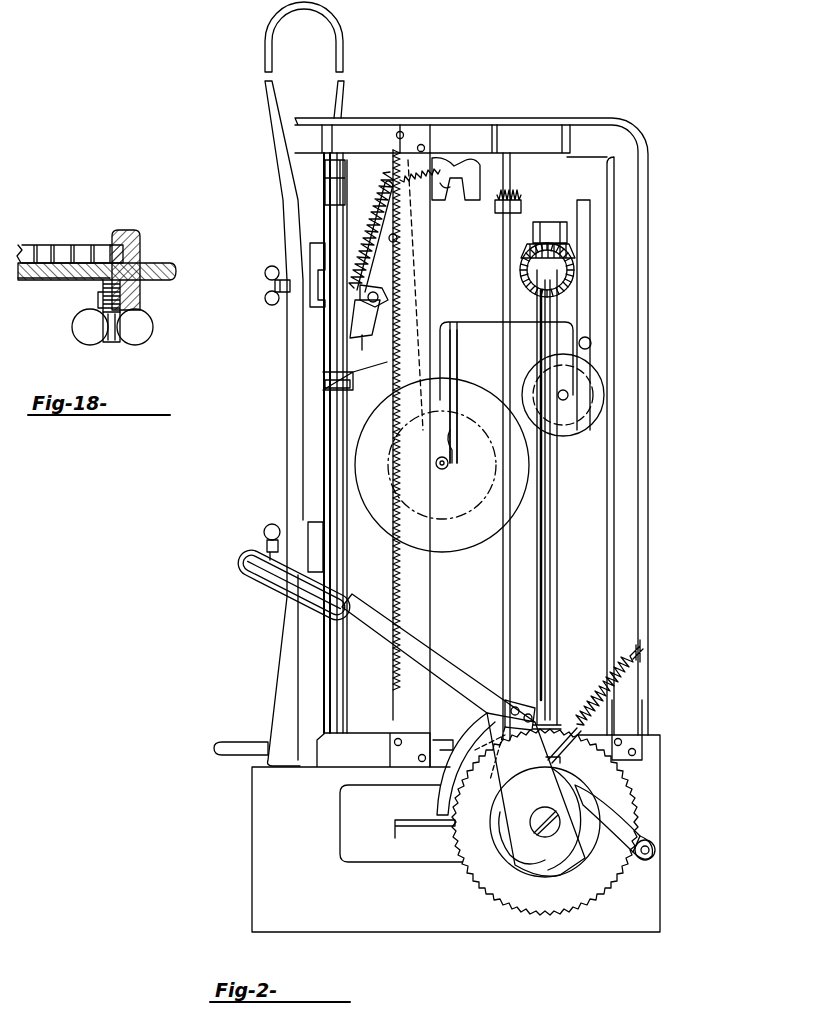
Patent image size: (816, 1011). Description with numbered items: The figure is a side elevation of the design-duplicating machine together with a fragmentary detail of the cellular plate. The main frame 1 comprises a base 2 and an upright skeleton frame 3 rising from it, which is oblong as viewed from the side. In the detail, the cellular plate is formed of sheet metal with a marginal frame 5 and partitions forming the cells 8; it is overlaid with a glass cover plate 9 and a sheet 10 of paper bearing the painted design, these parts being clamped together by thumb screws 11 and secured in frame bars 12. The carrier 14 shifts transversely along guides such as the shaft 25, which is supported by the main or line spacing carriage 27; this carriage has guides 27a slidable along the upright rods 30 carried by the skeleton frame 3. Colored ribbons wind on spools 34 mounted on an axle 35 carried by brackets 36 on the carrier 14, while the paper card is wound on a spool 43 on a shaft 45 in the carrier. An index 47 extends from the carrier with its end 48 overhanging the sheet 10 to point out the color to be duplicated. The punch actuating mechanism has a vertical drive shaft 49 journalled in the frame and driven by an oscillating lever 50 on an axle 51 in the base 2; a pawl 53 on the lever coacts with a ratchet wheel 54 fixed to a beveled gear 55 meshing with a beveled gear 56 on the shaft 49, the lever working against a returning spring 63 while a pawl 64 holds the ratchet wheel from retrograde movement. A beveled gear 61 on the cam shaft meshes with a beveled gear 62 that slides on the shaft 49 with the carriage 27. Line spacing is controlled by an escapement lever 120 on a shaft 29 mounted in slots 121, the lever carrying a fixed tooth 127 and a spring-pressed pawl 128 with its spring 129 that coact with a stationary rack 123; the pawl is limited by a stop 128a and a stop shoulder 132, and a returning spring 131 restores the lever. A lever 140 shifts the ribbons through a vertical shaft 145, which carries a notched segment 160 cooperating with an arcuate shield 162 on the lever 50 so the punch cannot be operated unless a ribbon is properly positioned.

In FIG. 2, the main frame 1 is at (200, 690).
In FIG. 2, the base 2 is at (252, 848).
In FIG. 2, the upright skeleton frame 3 is at (668, 520).
In FIG. 18, the marginal frame 5 is at (110, 248).
In FIG. 18, the cells 8 is at (45, 248).
In FIG. 18, the cover plate 9 is at (42, 280).
In FIG. 18, the sheet 10 is at (72, 282).
In FIG. 18, the thumb screws 11 is at (148, 335).
In FIG. 2, the thumb screws 11 is at (264, 296).
In FIG. 18, the frame bars 12 is at (140, 240).
In FIG. 2, the frame bars 12 is at (290, 622).
In FIG. 2, the carrier 14 is at (506, 392).
In FIG. 2, the shaft 25 is at (592, 343).
In FIG. 2, the main or line spacing carriage 27 is at (470, 328).
In FIG. 2, the guides 27a is at (330, 385).
In FIG. 2, the shaft 29 is at (398, 238).
In FIG. 2, the upright rods 30 is at (335, 665).
In FIG. 2, the spools 34 is at (380, 518).
In FIG. 2, the axle 35 is at (450, 468).
In FIG. 2, the brackets 36 is at (456, 430).
In FIG. 2, the spool 43 is at (575, 422).
In FIG. 2, the shaft 45 is at (568, 400).
In FIG. 2, the index 47 is at (264, 68).
In FIG. 2, the end of index 48 is at (300, 262).
In FIG. 2, the drive shaft 49 is at (548, 540).
In FIG. 2, the oscillating lever 50 is at (452, 662).
In FIG. 2, the axle 51 is at (565, 832).
In FIG. 2, the pawl 53 is at (508, 765).
In FIG. 2, the ratchet wheel 54 is at (500, 820).
In FIG. 2, the beveled gear 55 is at (470, 880).
In FIG. 2, the beveled gear 56 is at (564, 722).
In FIG. 2, the beveled gear 61 is at (560, 286).
In FIG. 2, the beveled gear 62 is at (565, 255).
In FIG. 2, the returning spring 63 is at (592, 688).
In FIG. 2, the pawl 64 is at (640, 835).
In FIG. 2, the lever 120 is at (392, 210).
In FIG. 2, the slots 121 is at (410, 262).
In FIG. 2, the rack 123 is at (392, 572).
In FIG. 2, the fixed tooth 127 is at (408, 150).
In FIG. 2, the pawl 128 is at (388, 292).
In FIG. 2, the stop 128a is at (355, 322).
In FIG. 2, the spring 129 is at (371, 160).
In FIG. 2, the returning spring 131 is at (440, 168).
In FIG. 2, the stop shoulder 132 is at (358, 367).
In FIG. 2, the lever 140 is at (222, 750).
In FIG. 2, the shaft 145 is at (497, 605).
In FIG. 2, the segment 160 is at (424, 837).
In FIG. 2, the arcuate shield 162 is at (438, 802).